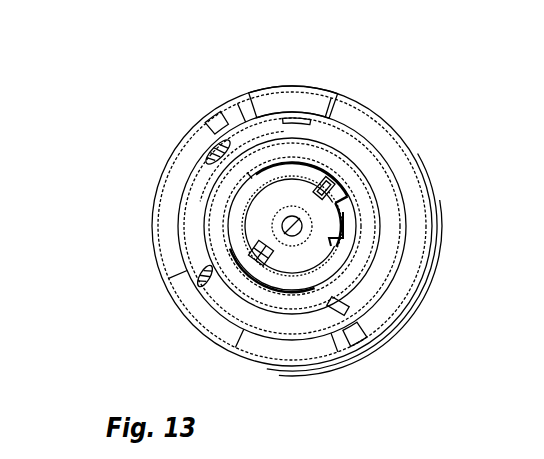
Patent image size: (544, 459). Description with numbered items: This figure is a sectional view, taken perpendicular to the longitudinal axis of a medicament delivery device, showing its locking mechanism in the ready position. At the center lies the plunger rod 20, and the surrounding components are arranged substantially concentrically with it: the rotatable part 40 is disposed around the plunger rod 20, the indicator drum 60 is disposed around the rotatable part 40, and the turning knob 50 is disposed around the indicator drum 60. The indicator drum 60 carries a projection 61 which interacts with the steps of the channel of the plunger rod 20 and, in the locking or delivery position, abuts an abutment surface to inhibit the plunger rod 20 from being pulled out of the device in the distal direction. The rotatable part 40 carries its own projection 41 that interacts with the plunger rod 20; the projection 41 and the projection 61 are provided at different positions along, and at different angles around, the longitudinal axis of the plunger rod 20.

The plunger rod 20 is at (260, 219).
The rotatable part 40 is at (342, 196).
The projection of the rotatable part 41 is at (327, 250).
The turning knob 50 is at (182, 163).
The indicator drum 60 is at (242, 163).
The projection of the indicator drum 61 is at (322, 177).